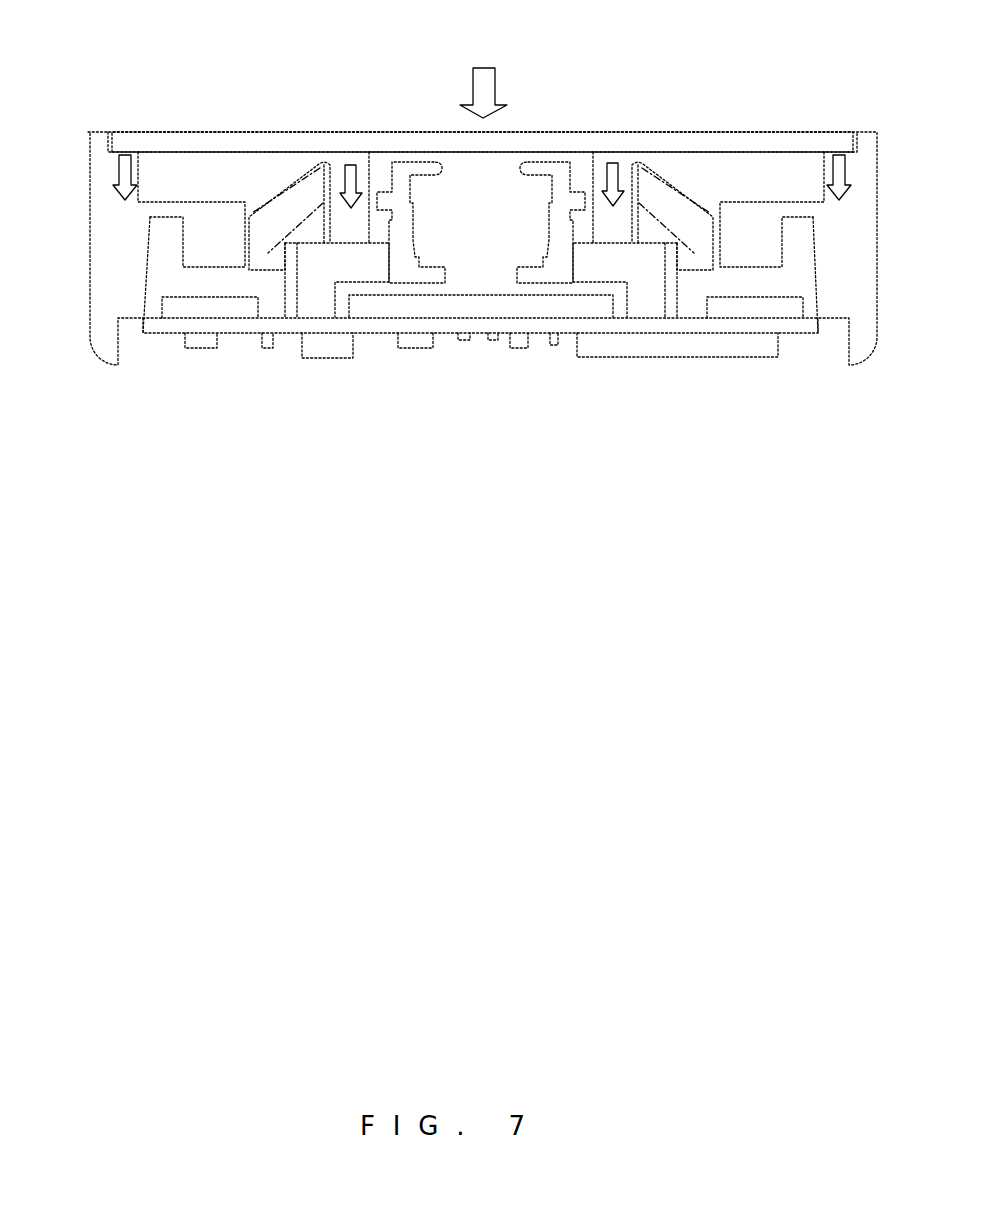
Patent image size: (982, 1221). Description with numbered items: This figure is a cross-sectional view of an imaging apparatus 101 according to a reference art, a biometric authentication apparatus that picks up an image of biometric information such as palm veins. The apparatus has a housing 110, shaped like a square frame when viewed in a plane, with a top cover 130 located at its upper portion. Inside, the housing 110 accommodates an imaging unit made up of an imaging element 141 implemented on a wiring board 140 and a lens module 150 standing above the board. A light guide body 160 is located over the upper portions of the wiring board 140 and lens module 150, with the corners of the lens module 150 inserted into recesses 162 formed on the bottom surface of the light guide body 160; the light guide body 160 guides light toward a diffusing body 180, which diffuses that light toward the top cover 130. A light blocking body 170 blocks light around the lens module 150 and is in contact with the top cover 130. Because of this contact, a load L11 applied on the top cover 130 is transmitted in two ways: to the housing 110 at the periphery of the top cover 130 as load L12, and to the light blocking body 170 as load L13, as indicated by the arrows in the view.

The imaging apparatus 101 is at (122, 106).
The housing 110 is at (97, 345).
The top cover 130 is at (710, 142).
The wiring board 140 is at (386, 344).
The imaging element 141 is at (512, 312).
The lens module 150 is at (552, 160).
The light guide body 160 is at (268, 252).
The recesses 162 is at (284, 253).
The light blocking body 170 is at (344, 156).
The diffusing body 180 is at (305, 183).
The load L11 is at (503, 93).
The load L12 is at (482, 178).
The load L13 is at (357, 173).